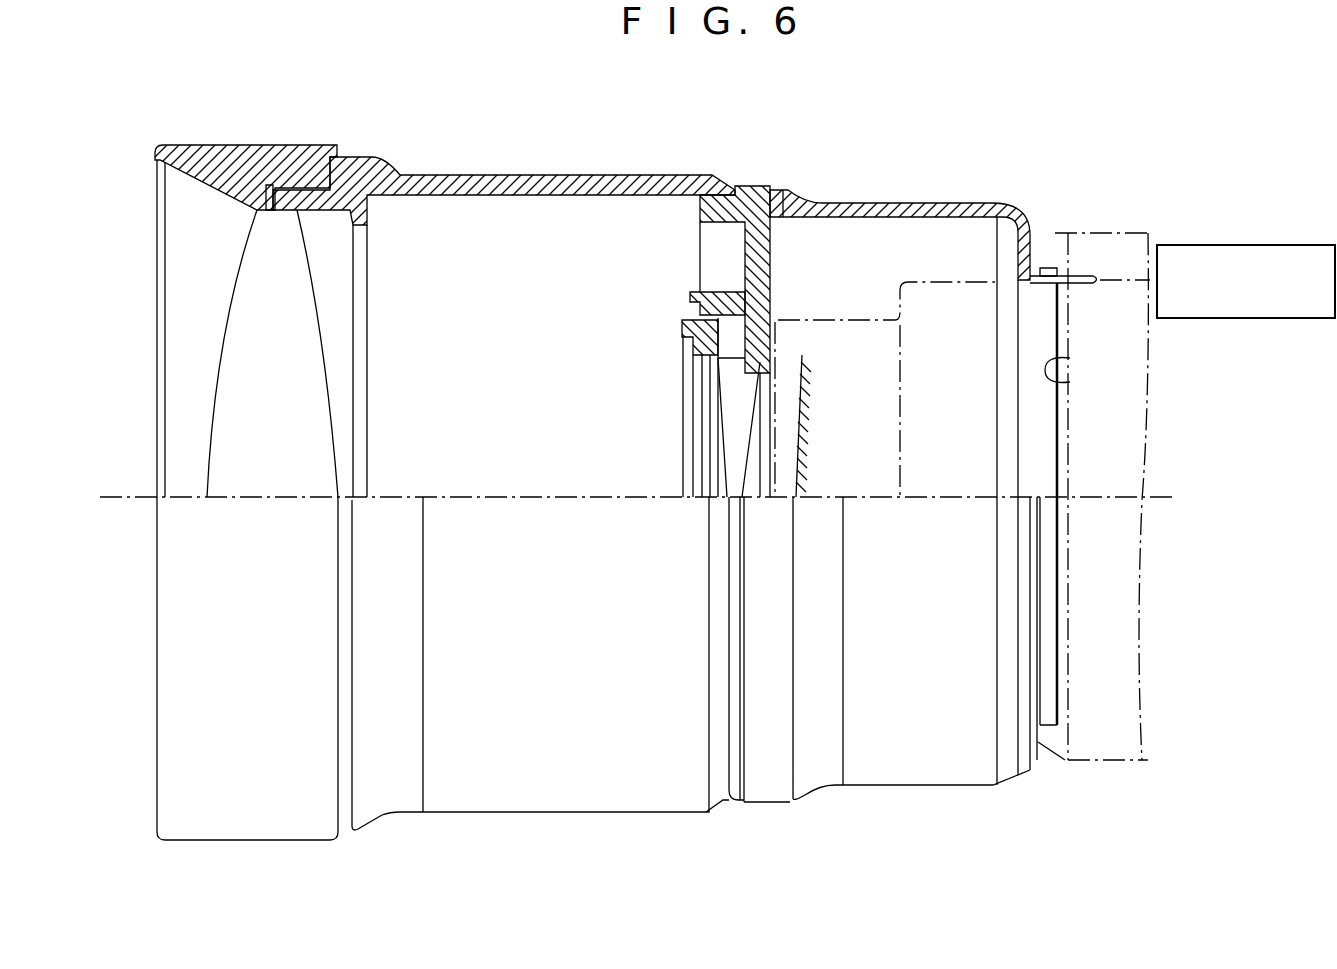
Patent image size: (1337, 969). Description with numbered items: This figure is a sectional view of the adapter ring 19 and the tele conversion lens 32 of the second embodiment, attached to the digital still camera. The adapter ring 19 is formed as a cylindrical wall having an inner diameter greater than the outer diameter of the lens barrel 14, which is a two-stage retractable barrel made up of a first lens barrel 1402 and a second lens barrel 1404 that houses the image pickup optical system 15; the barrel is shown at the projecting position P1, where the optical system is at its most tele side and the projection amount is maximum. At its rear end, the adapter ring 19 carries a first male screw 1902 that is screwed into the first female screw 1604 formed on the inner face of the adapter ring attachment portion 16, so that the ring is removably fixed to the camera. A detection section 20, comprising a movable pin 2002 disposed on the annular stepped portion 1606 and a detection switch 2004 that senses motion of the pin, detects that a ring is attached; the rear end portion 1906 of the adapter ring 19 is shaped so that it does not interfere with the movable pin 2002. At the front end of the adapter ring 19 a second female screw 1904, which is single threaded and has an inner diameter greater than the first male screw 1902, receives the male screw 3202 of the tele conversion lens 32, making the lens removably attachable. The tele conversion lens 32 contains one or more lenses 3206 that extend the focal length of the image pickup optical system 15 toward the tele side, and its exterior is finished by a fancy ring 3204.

The fancy ring 3204 is at (228, 145).
The tele conversion lens 32 is at (401, 152).
The lenses 3206 is at (223, 312).
The male screw 3202 is at (747, 185).
The adapter ring 19 is at (839, 187).
The second female screw 1904 is at (783, 215).
The first male screw 1902 is at (1043, 265).
The lens barrel 14 is at (985, 105).
The second lens barrel 1404 is at (873, 320).
The first lens barrel 1402 is at (940, 283).
The projecting position P1 is at (796, 369).
The image pickup optical system 15 is at (783, 382).
The detection section 20 is at (1278, 143).
The movable pin 2002 is at (1090, 278).
The detection switch 2004 is at (1225, 245).
The first female screw 1604 is at (1040, 285).
The annular stepped portion 1606 is at (1068, 382).
The rear end portion 1906 is at (1057, 432).
The adapter ring attachment portion 16 is at (1098, 766).